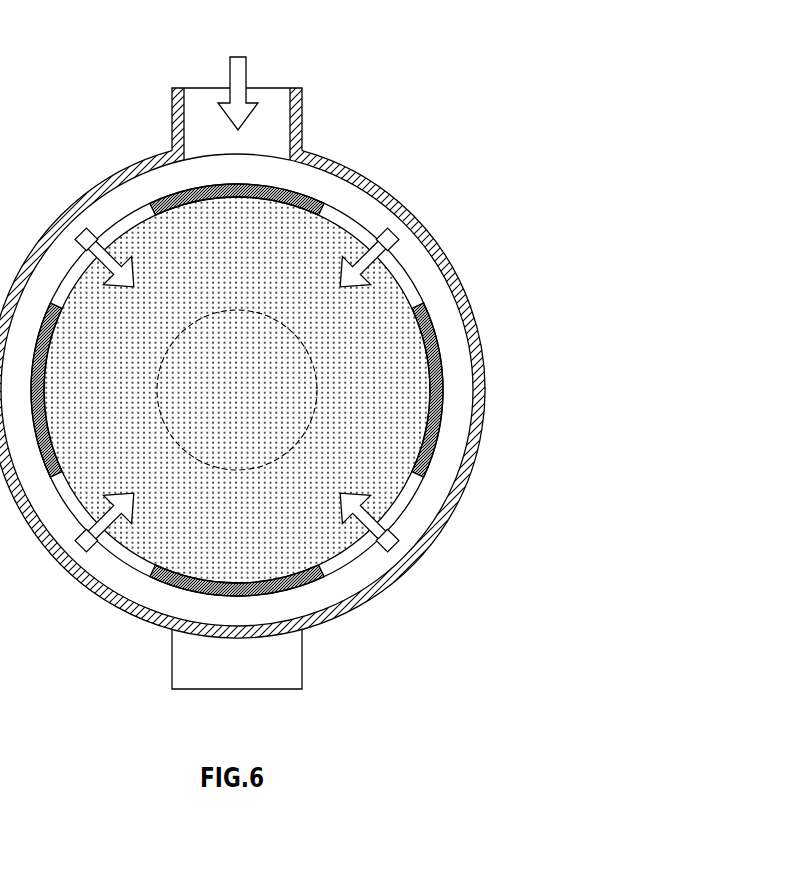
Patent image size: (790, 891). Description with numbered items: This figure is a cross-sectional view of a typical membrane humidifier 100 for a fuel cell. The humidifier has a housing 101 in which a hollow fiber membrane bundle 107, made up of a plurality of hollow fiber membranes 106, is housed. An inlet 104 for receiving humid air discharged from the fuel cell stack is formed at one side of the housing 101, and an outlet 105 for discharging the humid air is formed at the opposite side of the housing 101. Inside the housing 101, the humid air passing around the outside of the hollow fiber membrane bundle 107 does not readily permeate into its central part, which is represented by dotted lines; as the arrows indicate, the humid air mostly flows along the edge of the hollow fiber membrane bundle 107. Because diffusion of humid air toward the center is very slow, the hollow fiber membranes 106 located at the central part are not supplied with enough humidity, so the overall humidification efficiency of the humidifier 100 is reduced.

The membrane humidifier 100 is at (443, 195).
The housing 101 is at (372, 181).
The inlet 104 is at (277, 103).
The outlet 105 is at (255, 690).
The hollow fiber membrane 106 is at (393, 382).
The hollow fiber membrane bundle 107 is at (384, 301).